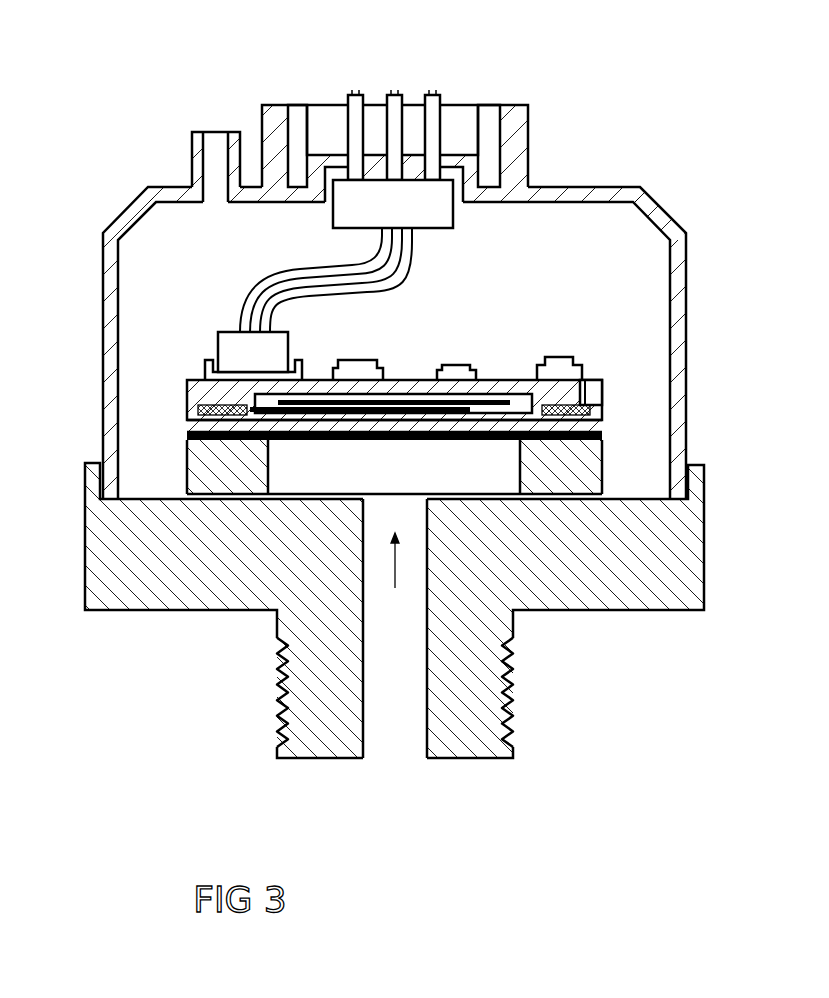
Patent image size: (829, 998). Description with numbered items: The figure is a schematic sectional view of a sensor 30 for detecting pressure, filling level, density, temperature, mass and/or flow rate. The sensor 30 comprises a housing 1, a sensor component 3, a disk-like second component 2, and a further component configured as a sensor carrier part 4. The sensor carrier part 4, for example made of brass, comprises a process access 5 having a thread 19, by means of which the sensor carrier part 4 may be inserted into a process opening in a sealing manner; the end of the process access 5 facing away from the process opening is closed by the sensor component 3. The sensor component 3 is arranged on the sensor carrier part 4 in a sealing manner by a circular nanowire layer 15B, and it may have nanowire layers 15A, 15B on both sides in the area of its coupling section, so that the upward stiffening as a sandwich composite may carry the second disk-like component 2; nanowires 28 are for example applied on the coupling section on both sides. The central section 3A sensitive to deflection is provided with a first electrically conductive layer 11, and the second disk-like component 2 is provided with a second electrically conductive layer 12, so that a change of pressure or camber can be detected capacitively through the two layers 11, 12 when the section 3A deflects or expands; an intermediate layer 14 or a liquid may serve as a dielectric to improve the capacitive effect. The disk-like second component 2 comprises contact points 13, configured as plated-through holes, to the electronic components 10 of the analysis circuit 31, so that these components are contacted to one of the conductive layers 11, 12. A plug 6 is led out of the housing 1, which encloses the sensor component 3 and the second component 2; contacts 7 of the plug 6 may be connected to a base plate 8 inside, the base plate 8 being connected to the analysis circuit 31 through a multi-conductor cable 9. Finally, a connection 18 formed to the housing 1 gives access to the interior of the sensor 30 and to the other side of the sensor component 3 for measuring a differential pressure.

The housing 1 is at (133, 210).
The disk-like second component 2 is at (205, 390).
The sensor component 3 is at (203, 465).
The section sensitive to deflection 3A is at (227, 423).
The sensor carrier part 4 is at (108, 577).
The process access 5 is at (394, 738).
The plug 6 is at (518, 123).
The contacts 7 is at (433, 94).
The base plate 8 is at (443, 212).
The multi-conductor cable 9 is at (270, 273).
The electronic components 10 is at (360, 360).
The first electrically conductive layer 11 is at (298, 423).
The second electrically conductive layer 12 is at (500, 398).
The contact points 13 is at (585, 392).
The intermediate layer 14 is at (402, 400).
The nanowire layer 15A is at (183, 437).
The circular nanowire layer 15B is at (588, 506).
The connection 18 is at (215, 152).
The thread 19 is at (277, 703).
The nanowires 28 is at (195, 410).
The sensor 30 is at (682, 146).
The analysis circuit 31 is at (210, 347).